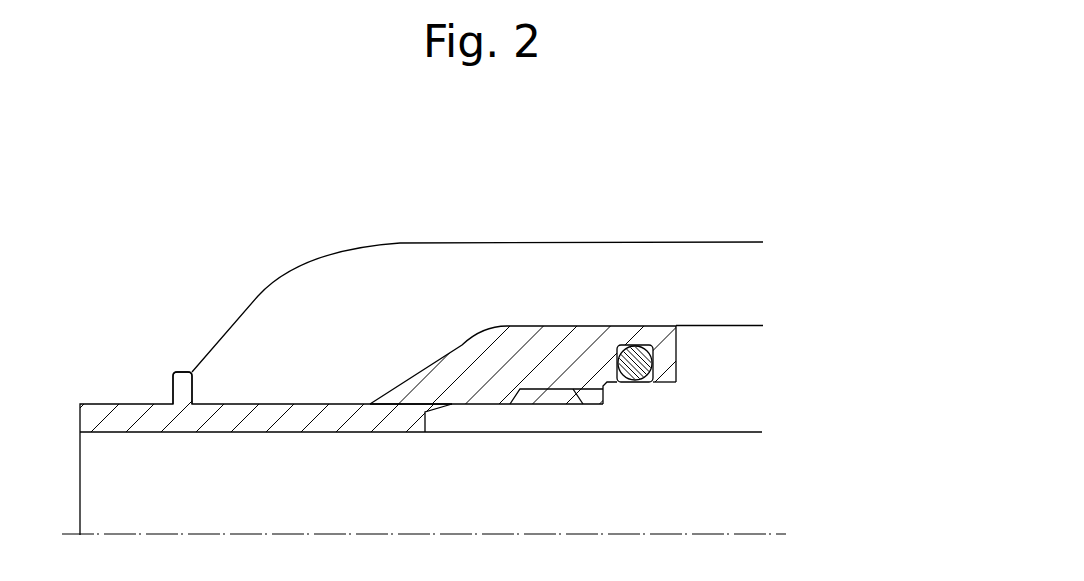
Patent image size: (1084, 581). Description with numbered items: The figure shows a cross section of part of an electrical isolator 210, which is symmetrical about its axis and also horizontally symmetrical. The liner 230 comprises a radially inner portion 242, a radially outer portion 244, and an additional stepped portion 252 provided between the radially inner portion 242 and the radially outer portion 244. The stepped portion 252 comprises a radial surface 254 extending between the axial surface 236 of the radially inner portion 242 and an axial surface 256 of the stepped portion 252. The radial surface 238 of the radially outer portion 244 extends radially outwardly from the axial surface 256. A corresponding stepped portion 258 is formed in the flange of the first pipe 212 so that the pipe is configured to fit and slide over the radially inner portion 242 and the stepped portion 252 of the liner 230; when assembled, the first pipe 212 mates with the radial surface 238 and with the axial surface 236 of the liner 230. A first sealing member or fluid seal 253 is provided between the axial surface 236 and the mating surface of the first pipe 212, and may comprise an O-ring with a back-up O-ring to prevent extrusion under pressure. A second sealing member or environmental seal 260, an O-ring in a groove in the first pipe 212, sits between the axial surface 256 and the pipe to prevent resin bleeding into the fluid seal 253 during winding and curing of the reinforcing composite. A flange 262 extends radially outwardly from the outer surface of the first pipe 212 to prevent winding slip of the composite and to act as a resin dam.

The electrical isolator 210 is at (201, 174).
The first pipe 212 is at (80, 412).
The liner 230 is at (723, 380).
The axial surface 236 is at (458, 406).
The radial surface 238 is at (677, 341).
The radially inner portion 242 is at (527, 418).
The radially outer portion 244 is at (713, 328).
The stepped portion 252 is at (650, 397).
The fluid seal 253 is at (562, 397).
The radial surface 254 is at (603, 397).
The axial surface 256 is at (673, 382).
The stepped portion 258 is at (470, 340).
The environmental seal 260 is at (633, 346).
The flange 262 is at (187, 372).